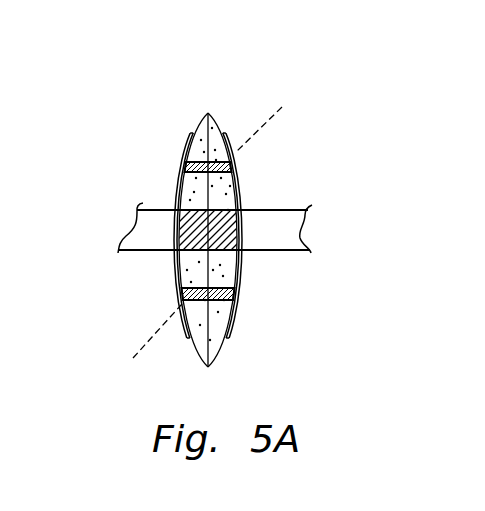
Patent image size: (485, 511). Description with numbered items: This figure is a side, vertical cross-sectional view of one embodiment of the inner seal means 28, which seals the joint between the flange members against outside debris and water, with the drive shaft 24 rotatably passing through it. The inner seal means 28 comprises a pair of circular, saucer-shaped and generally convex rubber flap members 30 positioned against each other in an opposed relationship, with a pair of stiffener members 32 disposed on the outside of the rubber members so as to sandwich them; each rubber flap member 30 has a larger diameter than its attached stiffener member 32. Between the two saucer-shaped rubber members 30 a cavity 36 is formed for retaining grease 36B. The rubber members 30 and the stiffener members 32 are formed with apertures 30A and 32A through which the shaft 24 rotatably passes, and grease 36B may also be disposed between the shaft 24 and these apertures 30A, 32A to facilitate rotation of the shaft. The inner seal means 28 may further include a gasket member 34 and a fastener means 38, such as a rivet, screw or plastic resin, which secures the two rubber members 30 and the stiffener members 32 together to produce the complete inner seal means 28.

The shaft 24 is at (300, 235).
The inner seal means 28 is at (252, 94).
The rubber flap member 30 is at (193, 131).
The aperture 30A is at (180, 285).
The stiffener member 32 is at (232, 317).
The aperture 32A is at (173, 210).
The gasket member 34 is at (211, 118).
The cavity 36 is at (239, 178).
The grease 36B is at (222, 200).
The fastener means 38 is at (206, 231).